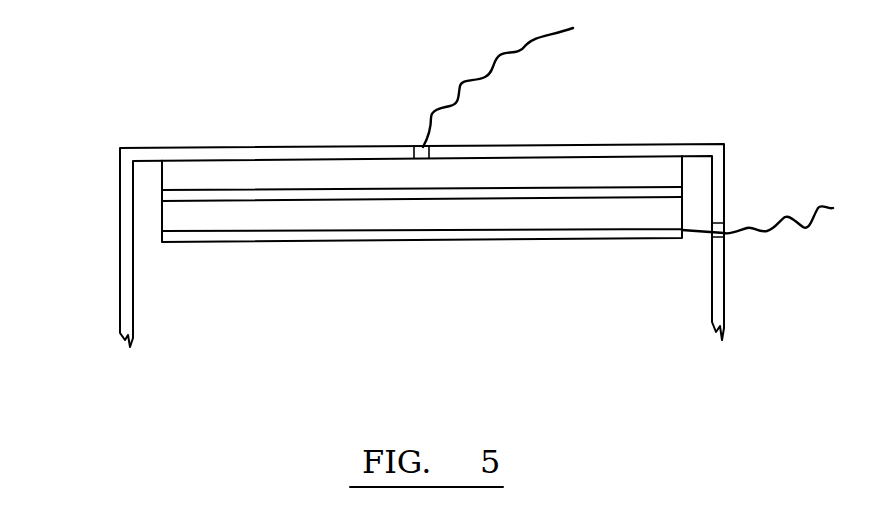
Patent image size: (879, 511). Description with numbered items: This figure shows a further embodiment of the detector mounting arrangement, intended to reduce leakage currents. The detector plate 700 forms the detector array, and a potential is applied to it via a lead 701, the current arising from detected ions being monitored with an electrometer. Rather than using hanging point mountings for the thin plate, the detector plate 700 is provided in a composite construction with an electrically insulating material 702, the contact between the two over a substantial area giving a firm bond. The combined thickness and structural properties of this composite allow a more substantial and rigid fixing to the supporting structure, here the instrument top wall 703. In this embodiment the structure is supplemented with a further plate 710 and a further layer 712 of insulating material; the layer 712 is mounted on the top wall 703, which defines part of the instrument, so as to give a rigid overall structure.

The detector plate 700 is at (465, 232).
The lead 701 is at (785, 217).
The electrically insulating material 702 is at (363, 215).
The top wall 703 is at (212, 153).
The further plate 710 is at (547, 195).
The further layer of insulating material 712 is at (323, 177).